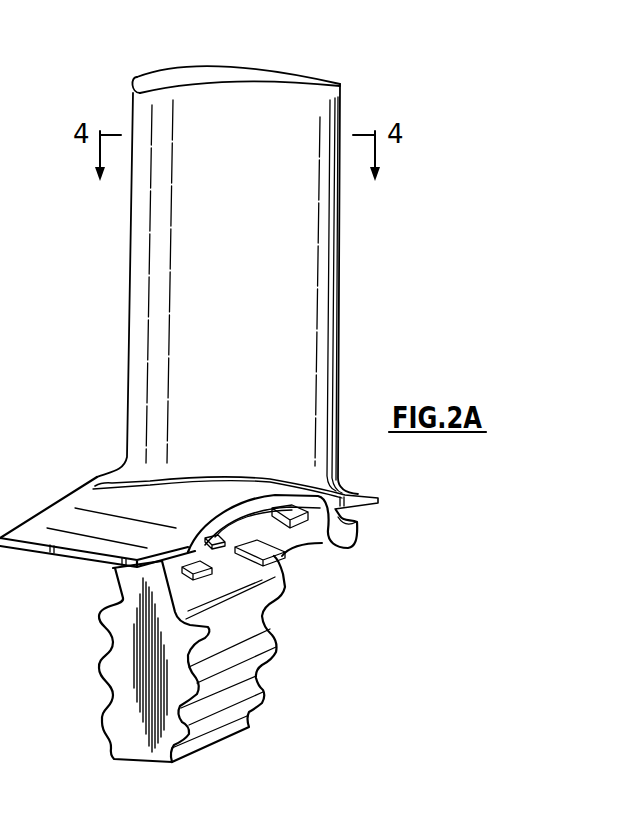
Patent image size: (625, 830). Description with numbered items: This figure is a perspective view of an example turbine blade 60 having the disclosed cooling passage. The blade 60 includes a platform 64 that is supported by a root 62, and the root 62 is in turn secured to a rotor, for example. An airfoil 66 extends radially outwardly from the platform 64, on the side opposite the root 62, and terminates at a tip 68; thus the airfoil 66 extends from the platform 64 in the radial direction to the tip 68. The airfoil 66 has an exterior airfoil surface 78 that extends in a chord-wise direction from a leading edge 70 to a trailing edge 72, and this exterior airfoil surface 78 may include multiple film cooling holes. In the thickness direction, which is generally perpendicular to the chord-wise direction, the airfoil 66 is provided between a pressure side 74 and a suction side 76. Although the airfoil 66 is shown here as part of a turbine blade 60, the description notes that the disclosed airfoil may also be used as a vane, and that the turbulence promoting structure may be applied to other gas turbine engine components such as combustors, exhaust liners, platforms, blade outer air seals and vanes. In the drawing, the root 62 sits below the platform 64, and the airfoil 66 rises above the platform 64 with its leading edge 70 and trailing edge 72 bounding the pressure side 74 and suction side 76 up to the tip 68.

The blade 60 is at (92, 230).
The root 62 is at (140, 668).
The platform 64 is at (243, 490).
The airfoil 66 is at (290, 375).
The tip 68 is at (149, 70).
The leading edge 70 is at (128, 240).
The trailing edge 72 is at (340, 228).
The pressure side 74 is at (241, 401).
The suction side 76 is at (260, 52).
The exterior airfoil surface 78 is at (352, 93).